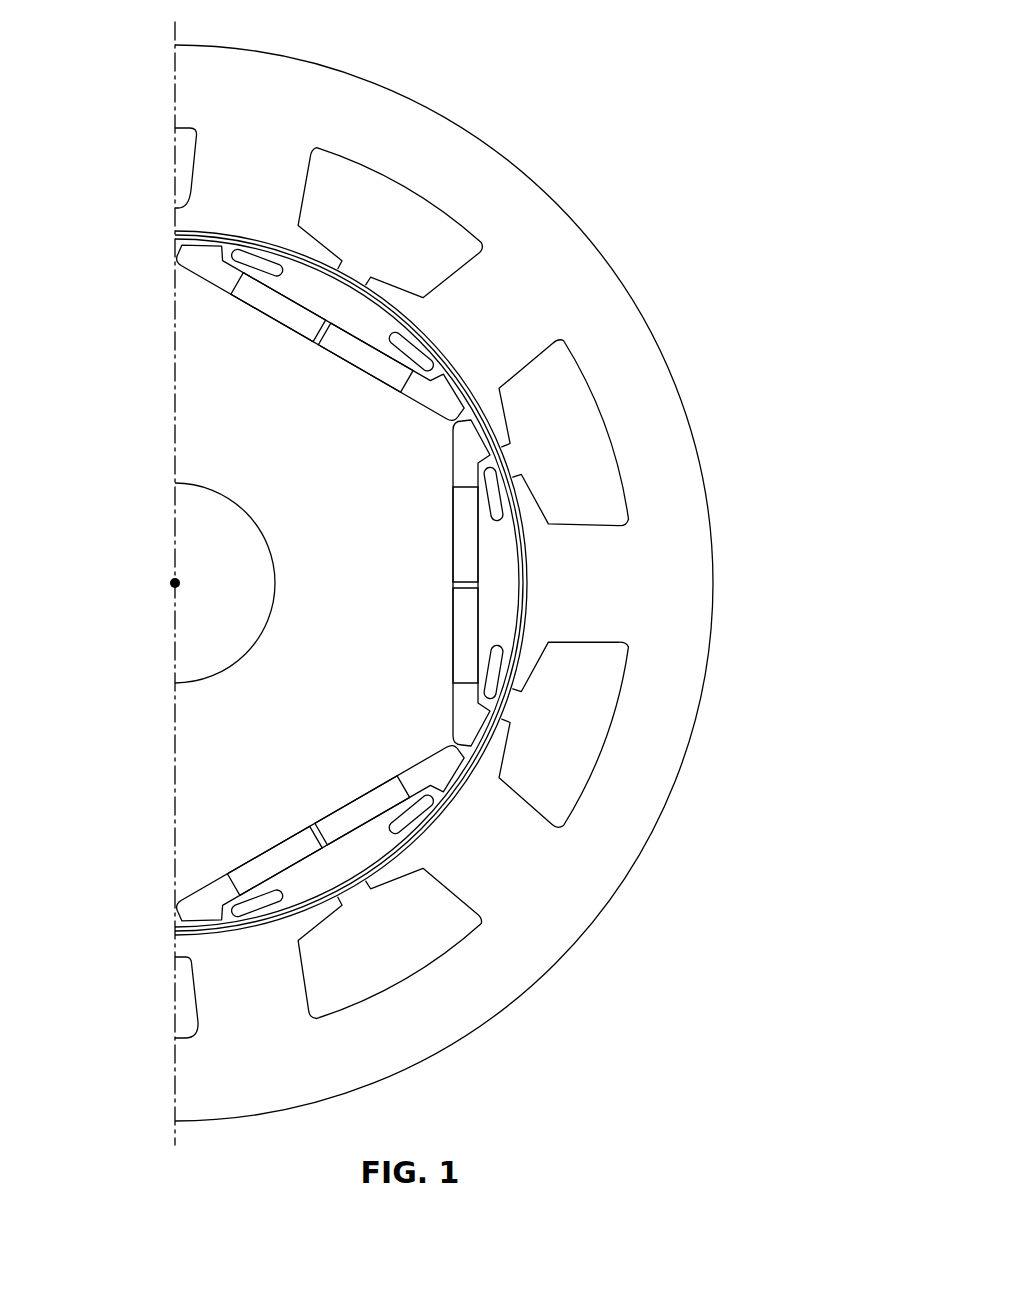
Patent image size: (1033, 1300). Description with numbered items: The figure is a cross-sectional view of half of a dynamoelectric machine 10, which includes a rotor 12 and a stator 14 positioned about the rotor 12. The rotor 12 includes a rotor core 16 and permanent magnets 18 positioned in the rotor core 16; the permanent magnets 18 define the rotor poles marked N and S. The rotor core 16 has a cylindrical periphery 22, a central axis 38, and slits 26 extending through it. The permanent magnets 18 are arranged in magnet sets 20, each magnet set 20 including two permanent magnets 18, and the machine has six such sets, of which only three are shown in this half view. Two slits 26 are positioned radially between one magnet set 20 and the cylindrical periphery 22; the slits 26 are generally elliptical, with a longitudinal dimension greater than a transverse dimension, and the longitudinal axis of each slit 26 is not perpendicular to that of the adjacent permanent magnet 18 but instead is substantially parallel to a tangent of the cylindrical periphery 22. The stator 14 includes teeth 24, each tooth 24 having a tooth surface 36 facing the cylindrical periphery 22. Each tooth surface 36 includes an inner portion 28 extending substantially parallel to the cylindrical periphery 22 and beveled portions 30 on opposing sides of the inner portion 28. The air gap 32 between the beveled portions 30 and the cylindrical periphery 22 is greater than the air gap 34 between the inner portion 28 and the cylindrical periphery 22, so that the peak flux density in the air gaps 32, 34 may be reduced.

The dynamoelectric machine 10 is at (520, 50).
The rotor 12 is at (203, 343).
The stator 14 is at (678, 466).
The rotor core 16 is at (227, 754).
The permanent magnets 18 is at (458, 528).
The magnet sets 20 is at (388, 483).
The cylindrical periphery 22 is at (276, 912).
The teeth 24 is at (622, 576).
The slits 26 is at (500, 525).
The inner portion 28 is at (455, 800).
The beveled portions 30 is at (508, 718).
The air gap 32 is at (359, 886).
The air gap 34 is at (410, 837).
The tooth surface 36 is at (446, 826).
The central axis 38 is at (175, 583).